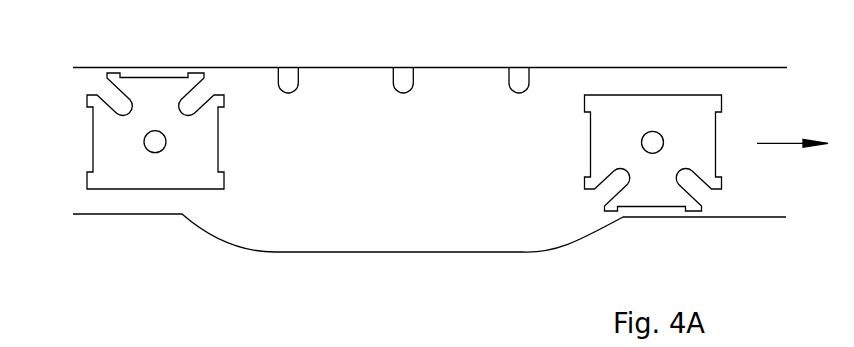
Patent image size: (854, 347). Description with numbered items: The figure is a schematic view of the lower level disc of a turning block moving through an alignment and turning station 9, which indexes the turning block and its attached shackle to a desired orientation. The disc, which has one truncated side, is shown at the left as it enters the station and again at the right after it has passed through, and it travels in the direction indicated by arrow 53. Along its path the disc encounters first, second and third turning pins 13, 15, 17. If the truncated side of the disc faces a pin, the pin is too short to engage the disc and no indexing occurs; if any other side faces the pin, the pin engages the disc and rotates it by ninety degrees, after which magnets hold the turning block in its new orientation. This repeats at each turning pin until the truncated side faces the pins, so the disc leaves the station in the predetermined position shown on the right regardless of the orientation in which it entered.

The alignment and turning station 9 is at (741, 68).
The first turning pin 13 is at (289, 77).
The second turning pin 15 is at (404, 77).
The third turning pin 17 is at (519, 77).
The direction of movement arrow 53 is at (782, 143).